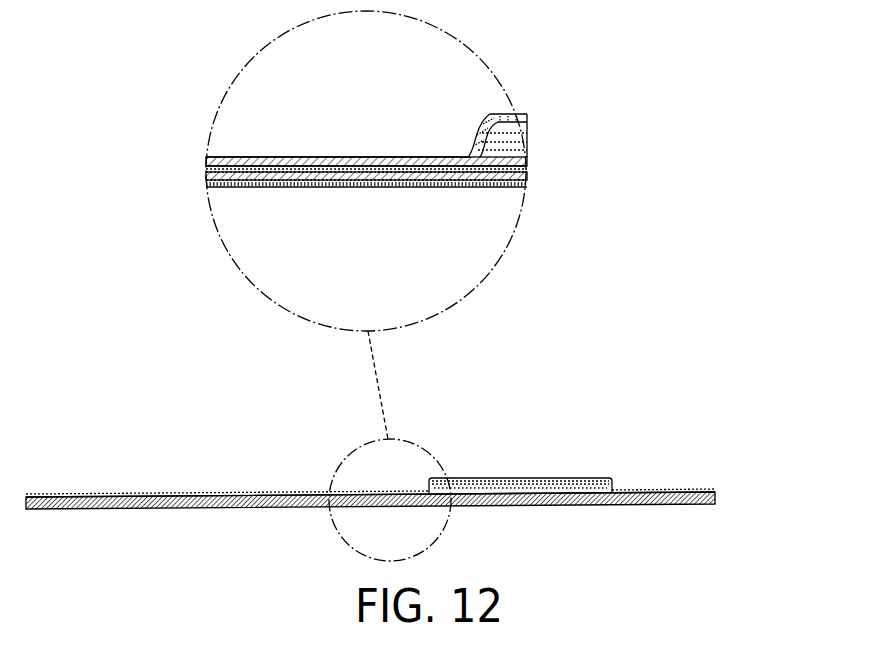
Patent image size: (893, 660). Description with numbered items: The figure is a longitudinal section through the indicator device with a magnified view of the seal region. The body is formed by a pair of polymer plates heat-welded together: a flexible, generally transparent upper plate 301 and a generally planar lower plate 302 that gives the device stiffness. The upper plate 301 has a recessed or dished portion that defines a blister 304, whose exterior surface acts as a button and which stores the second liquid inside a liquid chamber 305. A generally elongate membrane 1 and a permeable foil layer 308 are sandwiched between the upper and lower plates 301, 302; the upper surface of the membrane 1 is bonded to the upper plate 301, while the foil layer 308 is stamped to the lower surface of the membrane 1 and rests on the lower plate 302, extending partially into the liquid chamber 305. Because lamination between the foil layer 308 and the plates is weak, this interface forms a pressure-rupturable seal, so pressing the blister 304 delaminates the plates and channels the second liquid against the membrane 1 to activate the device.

The membrane 1 is at (370, 157).
The upper plate 301 is at (715, 495).
The lower plate 302 is at (528, 178).
The blister 304 is at (505, 113).
The liquid chamber 305 is at (521, 137).
The permeable foil layer 308 is at (438, 187).